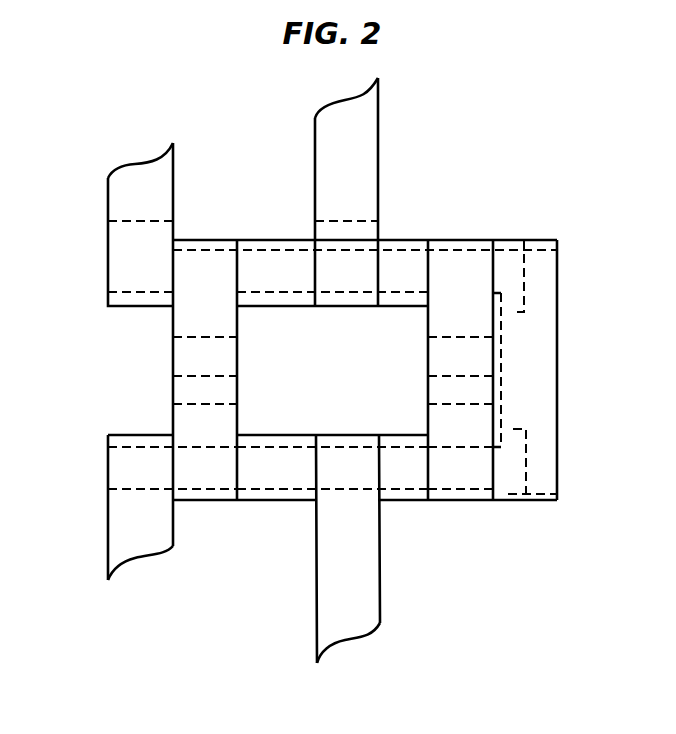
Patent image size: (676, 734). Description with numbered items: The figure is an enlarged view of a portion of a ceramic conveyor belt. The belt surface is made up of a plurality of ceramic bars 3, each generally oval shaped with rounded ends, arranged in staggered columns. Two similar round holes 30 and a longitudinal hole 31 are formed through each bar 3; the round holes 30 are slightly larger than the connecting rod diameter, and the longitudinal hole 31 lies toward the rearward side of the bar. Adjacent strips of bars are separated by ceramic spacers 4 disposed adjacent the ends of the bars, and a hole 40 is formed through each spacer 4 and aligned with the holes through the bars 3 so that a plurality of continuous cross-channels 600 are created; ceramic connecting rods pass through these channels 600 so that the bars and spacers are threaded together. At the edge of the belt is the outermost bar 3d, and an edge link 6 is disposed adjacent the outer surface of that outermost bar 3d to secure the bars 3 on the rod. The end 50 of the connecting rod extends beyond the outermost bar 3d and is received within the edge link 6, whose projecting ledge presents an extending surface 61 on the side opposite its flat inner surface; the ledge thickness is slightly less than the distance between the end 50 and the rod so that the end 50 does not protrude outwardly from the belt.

The ceramic bar 3 is at (380, 157).
The outermost bar 3d is at (463, 237).
The ceramic spacer 4 is at (287, 503).
The edge link 6 is at (535, 239).
The round hole 30 is at (120, 270).
The longitudinal hole 31 is at (207, 275).
The hole 40 is at (275, 467).
The end 50 is at (529, 449).
The extending surface 61 is at (506, 371).
The cross-channel 600 is at (285, 247).